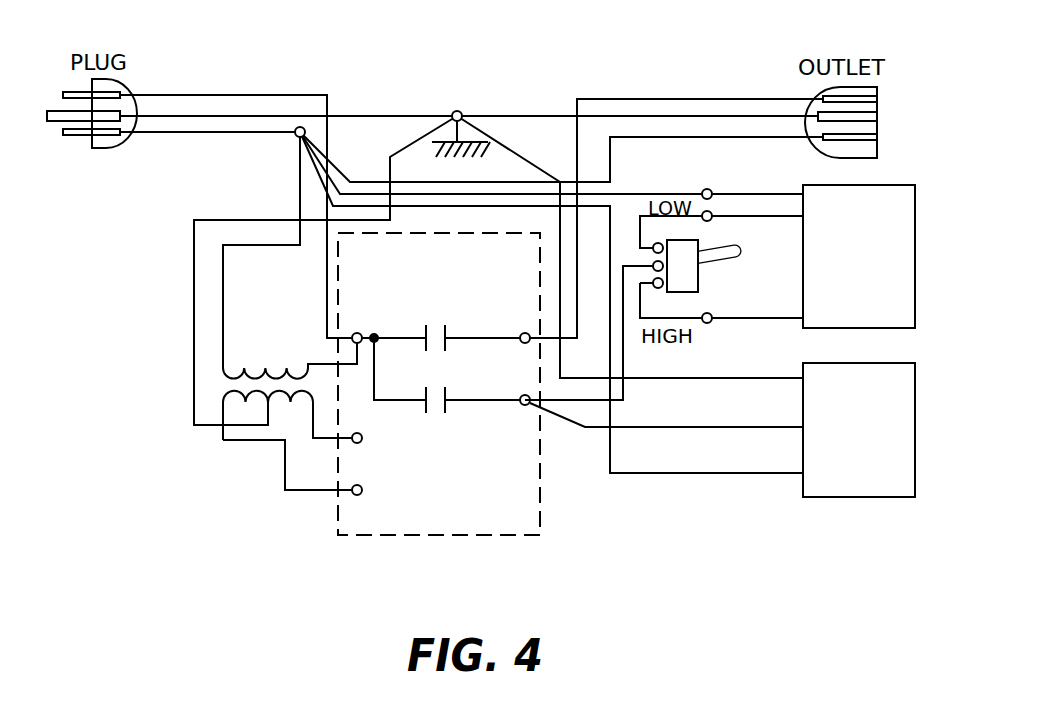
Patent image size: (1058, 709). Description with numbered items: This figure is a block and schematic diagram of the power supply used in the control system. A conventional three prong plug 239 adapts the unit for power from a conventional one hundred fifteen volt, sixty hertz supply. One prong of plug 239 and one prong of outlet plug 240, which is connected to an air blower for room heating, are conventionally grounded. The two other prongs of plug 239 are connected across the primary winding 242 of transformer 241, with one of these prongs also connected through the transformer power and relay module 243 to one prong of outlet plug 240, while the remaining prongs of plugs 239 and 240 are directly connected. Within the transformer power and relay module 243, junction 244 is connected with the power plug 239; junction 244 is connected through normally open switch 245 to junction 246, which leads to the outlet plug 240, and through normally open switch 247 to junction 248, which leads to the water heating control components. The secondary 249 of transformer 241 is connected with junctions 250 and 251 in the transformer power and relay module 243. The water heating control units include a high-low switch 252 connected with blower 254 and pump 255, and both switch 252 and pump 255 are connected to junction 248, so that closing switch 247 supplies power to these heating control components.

The three prong plug 239 is at (118, 138).
The outlet plug 240 is at (877, 156).
The transformer 241 is at (242, 399).
The primary winding 242 is at (268, 358).
The transformer power and relay module 243 is at (356, 538).
The junction 244 is at (358, 328).
The normally open switch 245 is at (433, 326).
The junction 246 is at (524, 330).
The normally open switch 247 is at (445, 413).
The junction 248 is at (522, 408).
The secondary 249 is at (290, 412).
The junction 250 is at (362, 436).
The junction 251 is at (352, 493).
The high-low switch 252 is at (700, 247).
The blower 254 is at (915, 262).
The pump 255 is at (915, 439).